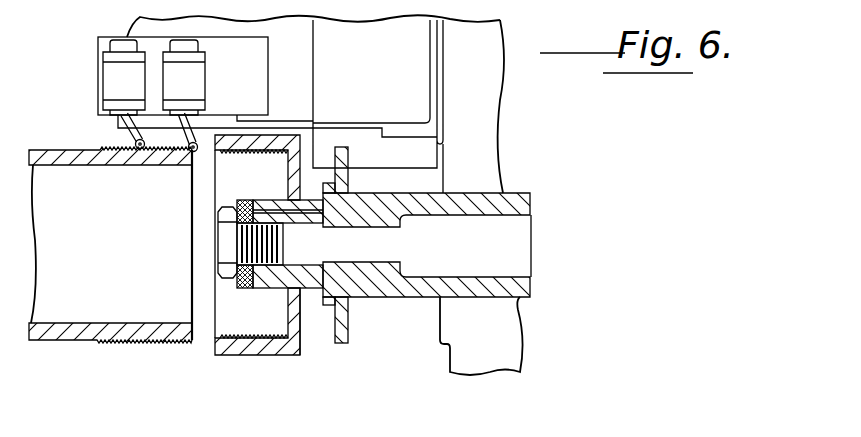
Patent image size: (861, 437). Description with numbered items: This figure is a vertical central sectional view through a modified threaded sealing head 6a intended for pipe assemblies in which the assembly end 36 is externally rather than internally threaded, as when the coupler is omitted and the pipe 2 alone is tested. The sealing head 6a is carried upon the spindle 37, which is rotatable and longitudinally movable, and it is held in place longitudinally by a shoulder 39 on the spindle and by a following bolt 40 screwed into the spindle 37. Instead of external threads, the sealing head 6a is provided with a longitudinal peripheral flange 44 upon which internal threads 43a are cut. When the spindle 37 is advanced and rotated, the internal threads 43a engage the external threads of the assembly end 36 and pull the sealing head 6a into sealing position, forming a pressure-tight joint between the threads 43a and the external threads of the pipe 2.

The pipe 2 is at (80, 331).
The assembly end 36 is at (196, 247).
The spindle 37 is at (392, 288).
The shoulder 39 is at (326, 300).
The following bolt 40 is at (228, 225).
The internal threads 43a is at (235, 331).
The longitudinal peripheral flange 44 is at (250, 357).
The threaded sealing head 6a is at (303, 326).